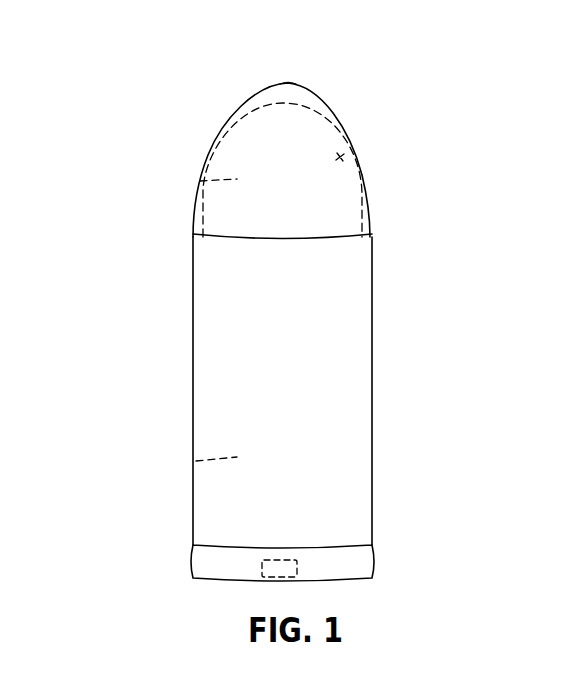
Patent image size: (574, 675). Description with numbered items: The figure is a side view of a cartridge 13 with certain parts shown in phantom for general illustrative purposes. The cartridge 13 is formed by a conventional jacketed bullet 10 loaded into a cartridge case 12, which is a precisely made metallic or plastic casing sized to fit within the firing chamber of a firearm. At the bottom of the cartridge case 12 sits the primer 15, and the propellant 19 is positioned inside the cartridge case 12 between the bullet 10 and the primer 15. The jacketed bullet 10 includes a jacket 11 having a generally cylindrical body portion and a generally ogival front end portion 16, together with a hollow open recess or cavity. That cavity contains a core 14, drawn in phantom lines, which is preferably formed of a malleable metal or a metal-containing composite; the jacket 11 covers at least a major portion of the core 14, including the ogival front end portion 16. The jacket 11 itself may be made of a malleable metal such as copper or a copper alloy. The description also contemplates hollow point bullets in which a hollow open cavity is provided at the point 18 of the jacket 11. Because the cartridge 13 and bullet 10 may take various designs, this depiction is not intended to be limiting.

The jacketed bullet 10 is at (330, 192).
The jacket 11 is at (342, 117).
The cartridge case 12 is at (328, 408).
The cartridge 13 is at (157, 354).
The core 14 is at (197, 185).
The primer 15 is at (297, 568).
The ogival front end portion 16 is at (340, 157).
The point 18 is at (287, 82).
The propellant 19 is at (193, 462).